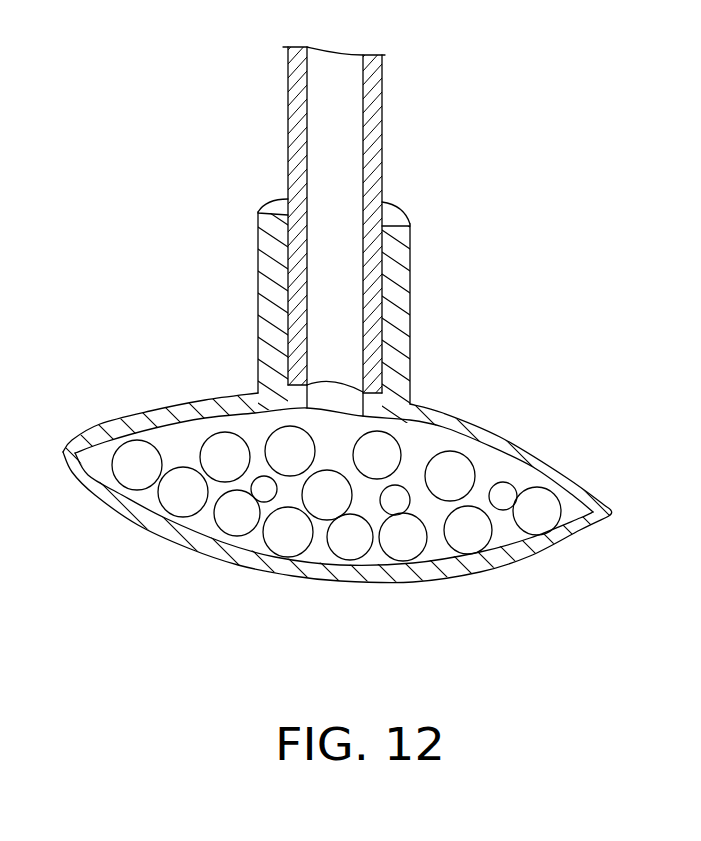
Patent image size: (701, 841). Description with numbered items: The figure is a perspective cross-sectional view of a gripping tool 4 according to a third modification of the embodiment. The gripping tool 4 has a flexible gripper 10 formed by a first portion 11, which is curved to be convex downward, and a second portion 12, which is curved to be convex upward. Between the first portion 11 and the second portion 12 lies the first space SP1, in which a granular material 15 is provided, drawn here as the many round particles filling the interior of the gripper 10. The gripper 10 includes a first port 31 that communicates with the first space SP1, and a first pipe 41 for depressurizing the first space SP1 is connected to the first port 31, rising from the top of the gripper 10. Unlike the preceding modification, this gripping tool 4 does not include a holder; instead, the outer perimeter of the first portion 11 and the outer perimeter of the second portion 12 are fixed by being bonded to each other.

The gripping tool 4 is at (350, 381).
The first pipe 41 is at (289, 142).
The first port 31 is at (258, 294).
The gripper 10 is at (350, 557).
The first portion 11 is at (590, 684).
The second portion 12 is at (492, 442).
The granular material 15 is at (181, 498).
The first space SP1 is at (318, 553).